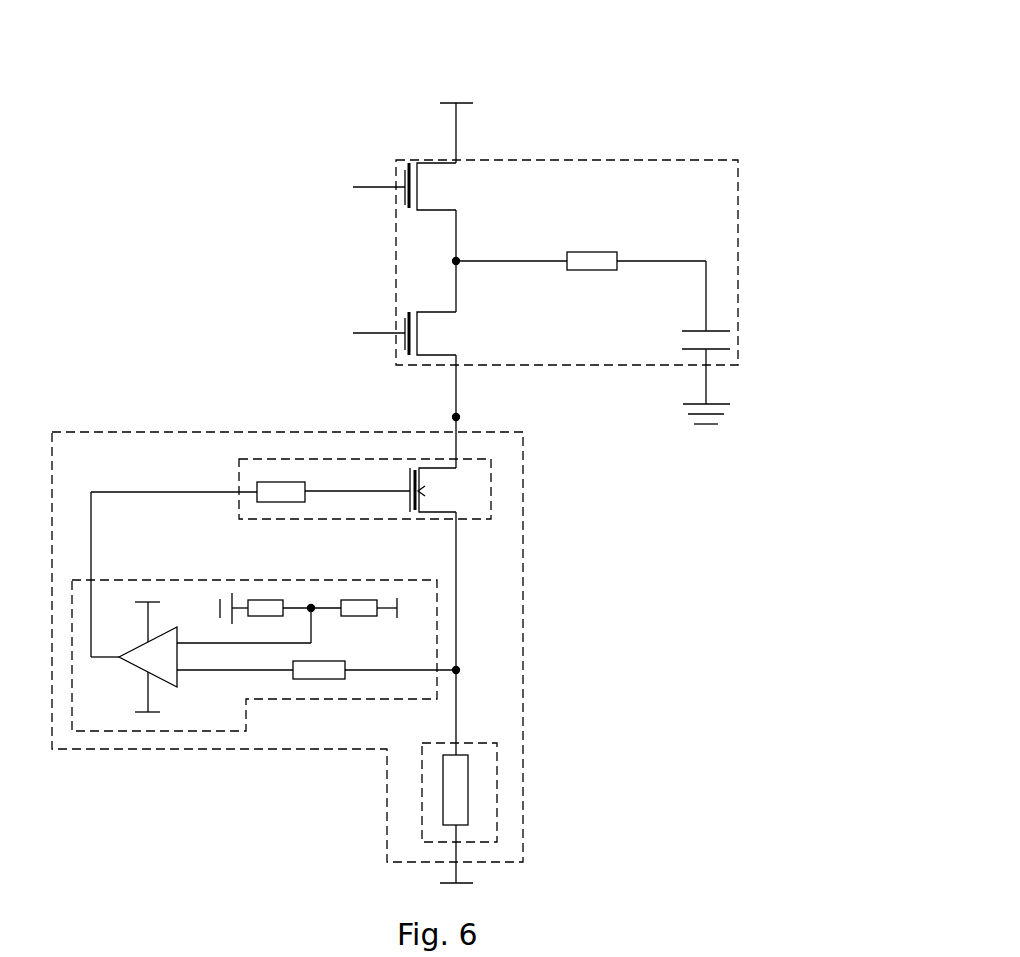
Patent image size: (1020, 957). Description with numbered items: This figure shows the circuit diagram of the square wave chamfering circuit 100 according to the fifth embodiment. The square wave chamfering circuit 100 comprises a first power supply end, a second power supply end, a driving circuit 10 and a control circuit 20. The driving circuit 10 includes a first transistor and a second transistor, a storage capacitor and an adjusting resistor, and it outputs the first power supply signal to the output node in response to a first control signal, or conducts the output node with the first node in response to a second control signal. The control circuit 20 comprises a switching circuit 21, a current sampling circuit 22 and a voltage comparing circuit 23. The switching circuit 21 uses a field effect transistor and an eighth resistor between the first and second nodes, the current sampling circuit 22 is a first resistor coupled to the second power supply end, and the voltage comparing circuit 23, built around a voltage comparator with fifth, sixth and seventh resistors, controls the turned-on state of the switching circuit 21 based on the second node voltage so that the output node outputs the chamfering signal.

The square wave chamfering circuit 100 is at (549, 127).
The driving circuit 10 is at (738, 276).
The control circuit 20 is at (523, 586).
The switching circuit 21 is at (365, 459).
The current sampling circuit 22 is at (497, 812).
The voltage comparing circuit 23 is at (215, 731).